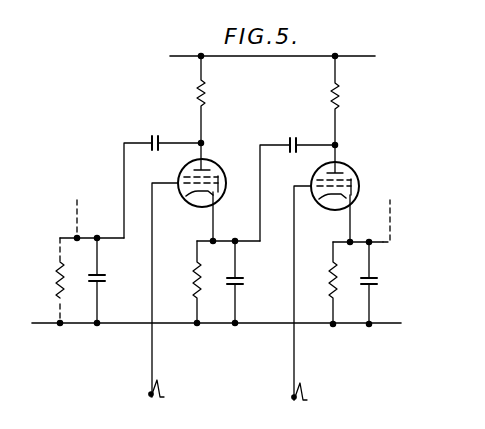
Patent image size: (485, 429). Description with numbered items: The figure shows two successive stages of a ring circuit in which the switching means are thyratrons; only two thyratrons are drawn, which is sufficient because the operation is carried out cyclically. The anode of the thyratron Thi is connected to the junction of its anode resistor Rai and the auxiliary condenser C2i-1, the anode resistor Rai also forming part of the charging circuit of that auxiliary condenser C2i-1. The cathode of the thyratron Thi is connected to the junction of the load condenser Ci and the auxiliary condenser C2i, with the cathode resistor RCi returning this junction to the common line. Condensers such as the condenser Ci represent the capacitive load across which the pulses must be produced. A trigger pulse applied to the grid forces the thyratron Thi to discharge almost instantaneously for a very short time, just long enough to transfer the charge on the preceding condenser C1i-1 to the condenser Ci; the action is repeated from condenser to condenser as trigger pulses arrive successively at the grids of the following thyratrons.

The anode resistor Rai is at (217, 101).
The auxiliary condenser C2i-1 is at (162, 177).
The auxiliary condenser C2i is at (297, 178).
The thyratron Thi is at (187, 270).
The cathode resistor RCi is at (179, 283).
The load condenser Ci is at (242, 281).
The load condenser C1i-1 is at (116, 282).